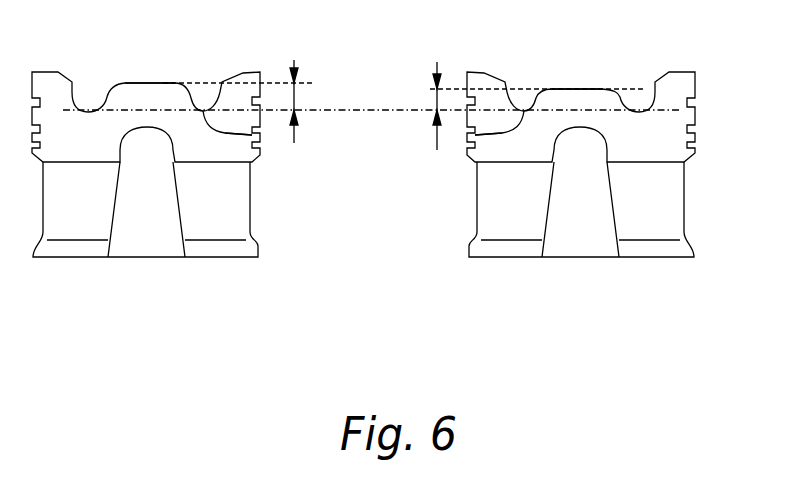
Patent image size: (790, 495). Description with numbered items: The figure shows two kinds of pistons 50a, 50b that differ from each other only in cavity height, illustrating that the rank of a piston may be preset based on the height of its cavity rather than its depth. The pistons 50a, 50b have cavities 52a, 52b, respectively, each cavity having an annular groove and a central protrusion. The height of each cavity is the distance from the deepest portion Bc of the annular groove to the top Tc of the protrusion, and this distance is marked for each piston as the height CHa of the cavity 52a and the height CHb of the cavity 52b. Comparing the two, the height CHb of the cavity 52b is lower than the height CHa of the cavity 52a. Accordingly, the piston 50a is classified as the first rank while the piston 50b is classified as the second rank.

The piston 50a is at (162, 185).
The piston 50b is at (587, 182).
The cavity 52a is at (112, 87).
The cavity 52b is at (617, 90).
The top of the protrusion Tc is at (148, 84).
The deepest portion of the annular groove Bc is at (261, 137).
The height of the cavity CHa is at (297, 95).
The height of the cavity CHb is at (435, 95).